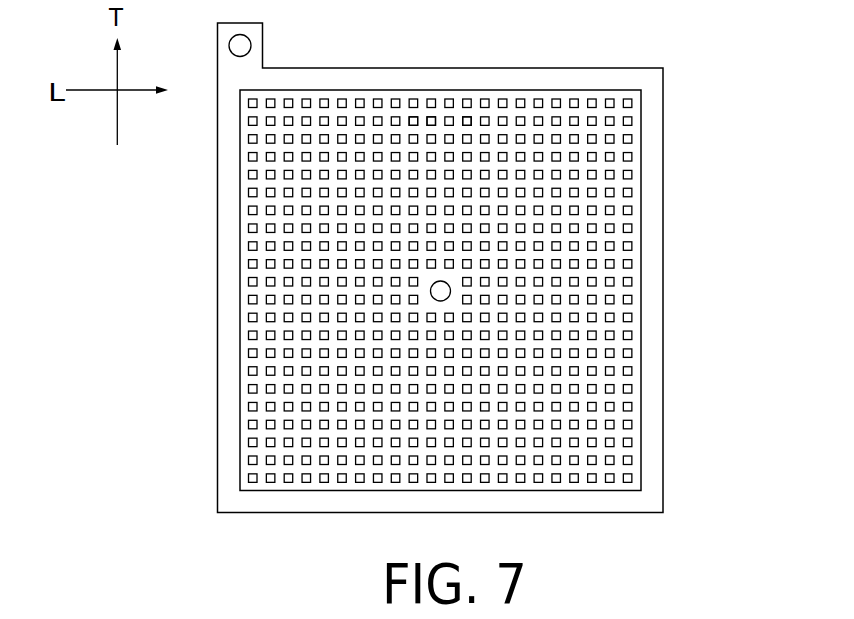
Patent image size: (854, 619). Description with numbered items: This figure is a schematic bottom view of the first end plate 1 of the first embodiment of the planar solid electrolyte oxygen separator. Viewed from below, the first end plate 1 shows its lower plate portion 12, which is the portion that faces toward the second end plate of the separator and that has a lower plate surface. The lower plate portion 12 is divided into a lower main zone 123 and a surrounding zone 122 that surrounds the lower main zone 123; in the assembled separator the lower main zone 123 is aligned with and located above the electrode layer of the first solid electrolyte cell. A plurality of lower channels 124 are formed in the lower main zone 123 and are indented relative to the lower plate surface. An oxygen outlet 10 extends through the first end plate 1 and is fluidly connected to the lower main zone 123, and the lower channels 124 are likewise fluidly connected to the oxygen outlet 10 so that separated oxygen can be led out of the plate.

The first end plate 1 is at (480, 261).
The oxygen outlet 10 is at (450, 293).
The lower plate portion 12 is at (636, 164).
The surrounding zone 122 is at (601, 77).
The lower main zone 123 is at (413, 124).
The lower channels 124 is at (475, 120).